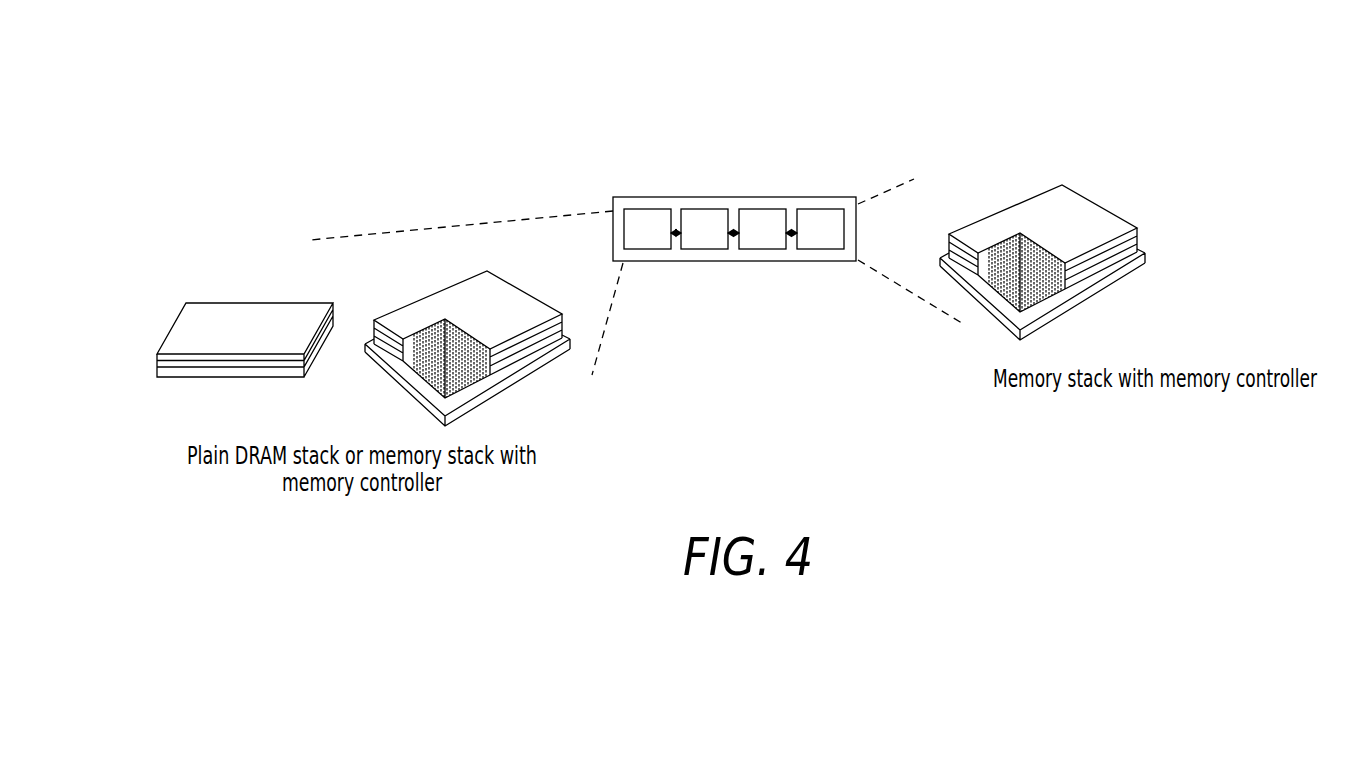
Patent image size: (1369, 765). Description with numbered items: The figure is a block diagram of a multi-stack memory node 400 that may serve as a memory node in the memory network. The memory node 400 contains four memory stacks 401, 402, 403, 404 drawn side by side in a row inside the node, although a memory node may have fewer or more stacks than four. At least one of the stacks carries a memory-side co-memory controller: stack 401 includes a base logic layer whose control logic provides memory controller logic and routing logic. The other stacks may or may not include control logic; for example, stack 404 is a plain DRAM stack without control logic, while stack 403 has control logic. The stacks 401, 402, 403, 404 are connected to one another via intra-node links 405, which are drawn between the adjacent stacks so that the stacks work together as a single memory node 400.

The multi-stack memory node 400 is at (734, 153).
The memory stack 401 is at (647, 229).
The memory stack 402 is at (704, 229).
The memory stack 403 is at (762, 229).
The memory stack 404 is at (820, 229).
The intra-node links 405 is at (812, 290).